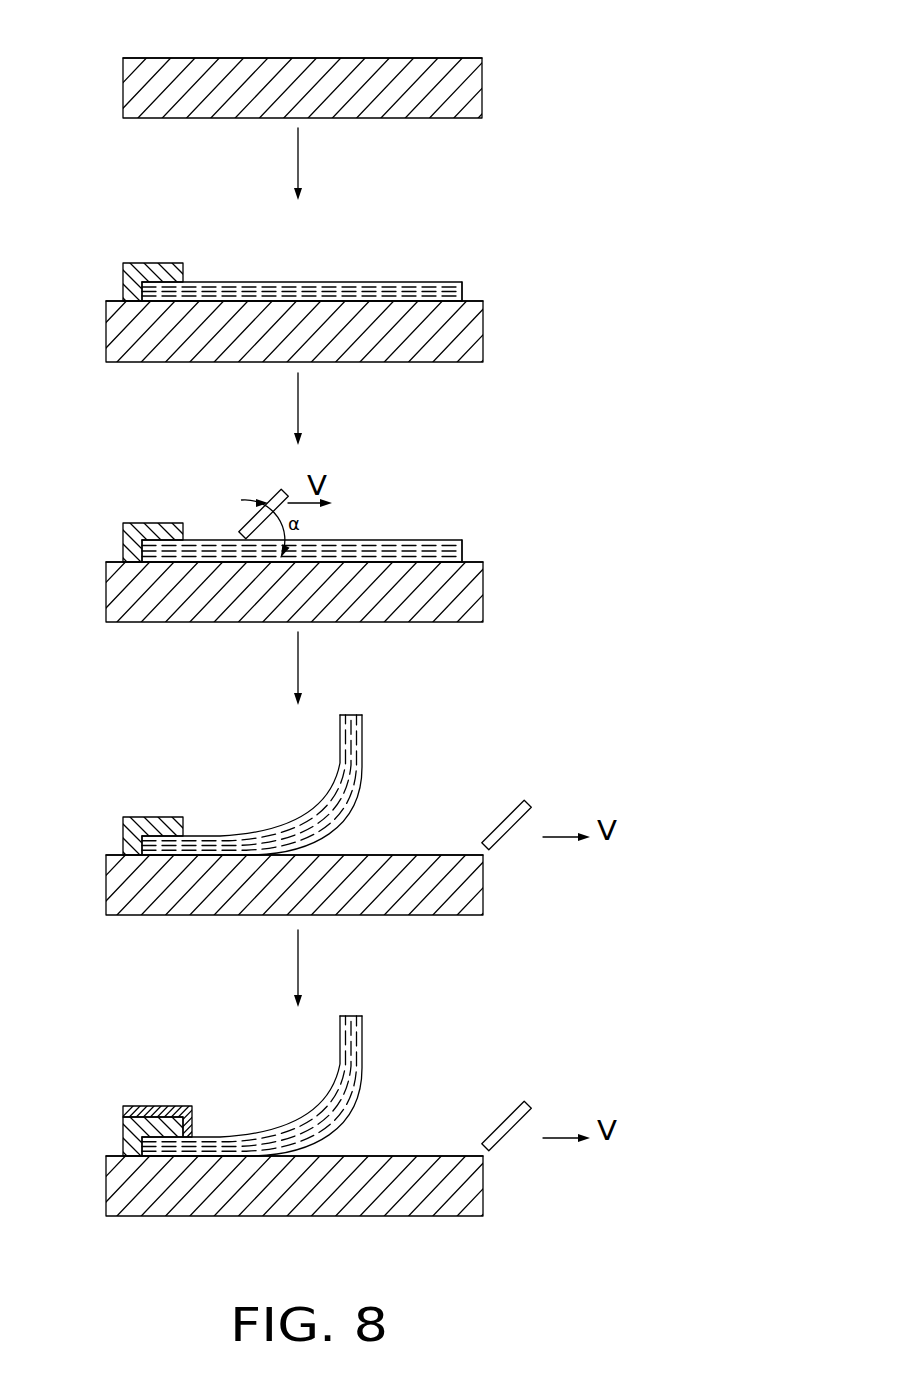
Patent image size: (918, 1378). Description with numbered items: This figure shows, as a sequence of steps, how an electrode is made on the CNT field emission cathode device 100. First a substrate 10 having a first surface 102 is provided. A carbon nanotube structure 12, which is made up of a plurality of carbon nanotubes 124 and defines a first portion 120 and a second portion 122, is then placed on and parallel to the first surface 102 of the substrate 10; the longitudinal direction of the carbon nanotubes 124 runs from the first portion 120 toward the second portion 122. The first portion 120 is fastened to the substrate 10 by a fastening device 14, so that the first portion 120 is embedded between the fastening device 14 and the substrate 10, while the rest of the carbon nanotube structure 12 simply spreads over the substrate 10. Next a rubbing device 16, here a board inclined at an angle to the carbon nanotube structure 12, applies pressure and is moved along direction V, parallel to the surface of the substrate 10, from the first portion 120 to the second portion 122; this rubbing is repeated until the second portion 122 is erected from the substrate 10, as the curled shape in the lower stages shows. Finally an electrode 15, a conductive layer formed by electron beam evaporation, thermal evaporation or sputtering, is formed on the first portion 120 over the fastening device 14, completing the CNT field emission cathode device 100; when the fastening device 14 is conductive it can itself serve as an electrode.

The substrate 10 is at (463, 90).
The first surface 102 is at (158, 58).
The carbon nanotube structure 12 is at (282, 280).
The first portion 120 is at (165, 288).
The second portion 122 is at (443, 293).
The carbon nanotubes 124 is at (415, 290).
The fastening device 14 is at (150, 272).
The electrode 15 is at (145, 1110).
The rubbing device 16 is at (273, 503).
The CNT field emission cathode device 100 is at (463, 1048).